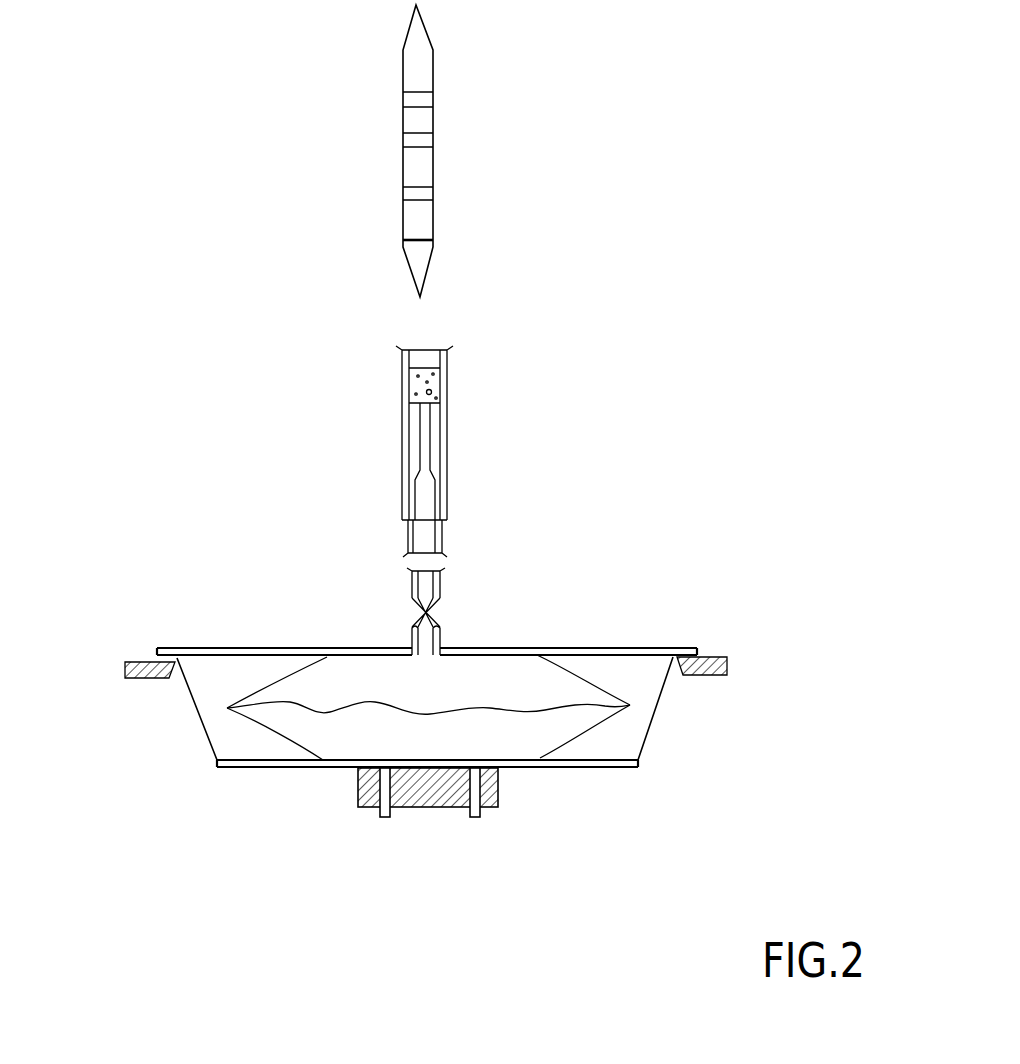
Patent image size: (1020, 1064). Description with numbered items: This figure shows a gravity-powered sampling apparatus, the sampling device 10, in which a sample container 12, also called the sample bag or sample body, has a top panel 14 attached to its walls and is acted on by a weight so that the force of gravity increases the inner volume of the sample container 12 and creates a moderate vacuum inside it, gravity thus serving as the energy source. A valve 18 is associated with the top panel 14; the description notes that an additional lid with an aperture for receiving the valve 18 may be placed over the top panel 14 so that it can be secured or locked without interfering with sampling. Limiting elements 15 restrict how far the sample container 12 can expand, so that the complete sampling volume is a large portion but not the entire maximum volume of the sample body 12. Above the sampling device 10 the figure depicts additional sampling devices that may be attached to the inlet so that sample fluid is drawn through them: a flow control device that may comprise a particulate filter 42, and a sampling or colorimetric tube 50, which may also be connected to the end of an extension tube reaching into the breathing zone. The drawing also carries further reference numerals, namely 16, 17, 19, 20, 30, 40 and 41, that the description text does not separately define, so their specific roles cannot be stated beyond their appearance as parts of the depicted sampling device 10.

The sampling device 10 is at (702, 404).
The sample container 12 is at (530, 678).
The top panel 14 is at (230, 648).
The limiting elements 15 is at (197, 710).
The bottom wall 16 is at (567, 768).
The electrical contacts 17 is at (475, 817).
The valve 18 is at (433, 612).
The lid rim 19 is at (157, 656).
The heating block 20 is at (355, 780).
The support 30 is at (160, 680).
The tube 40 is at (402, 435).
The plunger rod 41 is at (430, 460).
The particulate filter 42 is at (443, 388).
The sampling or colorimetric tube 50 is at (420, 165).